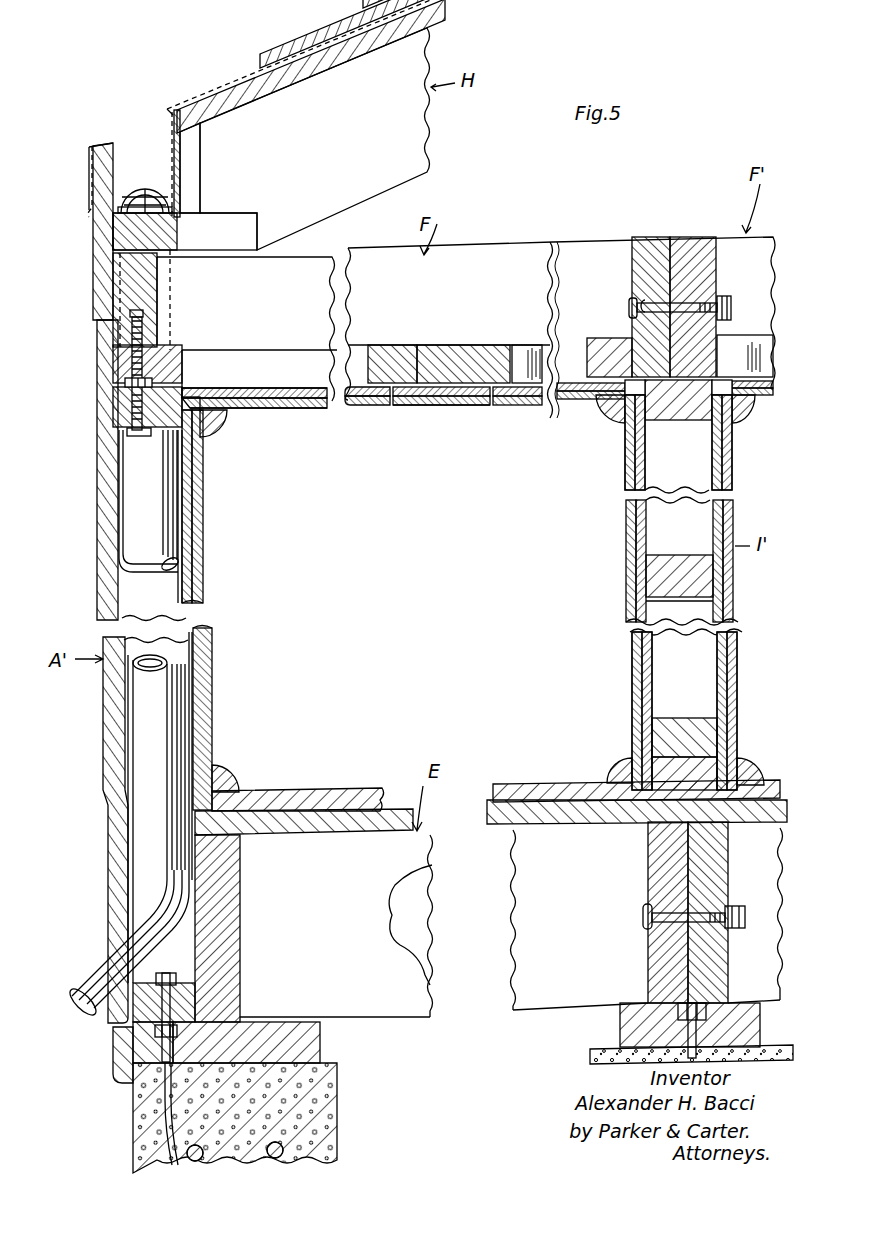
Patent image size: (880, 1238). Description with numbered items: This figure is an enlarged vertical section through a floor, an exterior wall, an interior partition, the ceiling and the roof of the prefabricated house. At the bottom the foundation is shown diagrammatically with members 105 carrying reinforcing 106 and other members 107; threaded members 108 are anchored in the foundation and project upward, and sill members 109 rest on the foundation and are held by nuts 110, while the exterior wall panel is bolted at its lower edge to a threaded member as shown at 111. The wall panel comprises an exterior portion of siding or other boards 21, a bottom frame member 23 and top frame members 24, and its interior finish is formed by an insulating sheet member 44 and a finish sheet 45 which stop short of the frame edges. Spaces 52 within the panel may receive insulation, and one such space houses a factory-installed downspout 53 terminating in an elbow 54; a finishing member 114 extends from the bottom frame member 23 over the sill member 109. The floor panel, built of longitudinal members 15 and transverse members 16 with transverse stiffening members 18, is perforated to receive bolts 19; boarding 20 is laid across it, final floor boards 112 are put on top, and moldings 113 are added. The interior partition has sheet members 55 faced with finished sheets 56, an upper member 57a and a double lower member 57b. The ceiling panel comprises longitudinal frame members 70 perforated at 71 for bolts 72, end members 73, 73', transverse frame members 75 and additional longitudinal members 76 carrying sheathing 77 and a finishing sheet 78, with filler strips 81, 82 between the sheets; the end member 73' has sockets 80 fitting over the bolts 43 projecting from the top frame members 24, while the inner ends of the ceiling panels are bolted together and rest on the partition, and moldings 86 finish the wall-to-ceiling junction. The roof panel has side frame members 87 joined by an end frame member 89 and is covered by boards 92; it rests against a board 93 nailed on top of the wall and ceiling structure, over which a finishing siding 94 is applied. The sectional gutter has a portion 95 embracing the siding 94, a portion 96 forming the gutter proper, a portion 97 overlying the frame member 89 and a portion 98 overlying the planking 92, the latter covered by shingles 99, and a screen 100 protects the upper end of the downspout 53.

The longitudinal members 15 is at (415, 917).
The transverse members 16 is at (233, 920).
The transverse stiffening members 18 is at (510, 1027).
The bolts or other fastening members 19 is at (657, 917).
The boarding 20 is at (550, 824).
The siding or other boards 21 is at (103, 596).
The bottom frame member 23 is at (200, 993).
The top frame members 24 is at (127, 404).
The pins, bolts or other fastening members 43 is at (130, 313).
The sheet member 44 is at (190, 490).
The sheet 45 is at (205, 528).
The spaces 52 is at (180, 643).
The downspout 53 is at (140, 485).
The elbow or laterally bent portion 54 is at (97, 957).
The sheet members 55 is at (713, 530).
The sheet of finished material 56 is at (630, 646).
The upper member 57a is at (673, 423).
The lower member 57b is at (660, 777).
The longitudinal frame members 70 is at (556, 234).
The perforations 71 is at (646, 294).
The bolts 72 is at (629, 308).
The end member 73 is at (684, 286).
The end frame member 73' is at (88, 300).
The transverse frame members 75 is at (445, 347).
The additional longitudinal frame members 76 is at (308, 353).
The sheathing 77 is at (270, 393).
The finishing sheet 78 is at (308, 409).
The holes or sockets 80 is at (140, 313).
The transverse filler strips 81 is at (413, 388).
The longitudinal filler strips 82 is at (438, 406).
The moldings 86 is at (221, 427).
The side frame members 87 is at (412, 124).
The end frame member 89 is at (186, 163).
The boards 92 is at (285, 84).
The board 93 is at (212, 230).
The finishing siding 94 is at (103, 255).
The gutter portion 95 is at (90, 147).
The gutter proper 96 is at (132, 176).
The gutter portion 97 is at (175, 140).
The gutter portion 98 is at (228, 82).
The shingles 99 is at (190, 99).
The screen 100 is at (174, 150).
The foundation members 105 is at (330, 1113).
The reinforcing 106 is at (285, 1148).
The other foundation members 107 is at (590, 1054).
The threaded members 108 is at (165, 1110).
The sill members 109 is at (303, 1043).
The nuts 110 is at (700, 1008).
The bolting of wall section 111 is at (168, 973).
The final floor members 112 is at (340, 790).
The moldings 113 is at (230, 778).
The finishing member 114 is at (112, 1048).